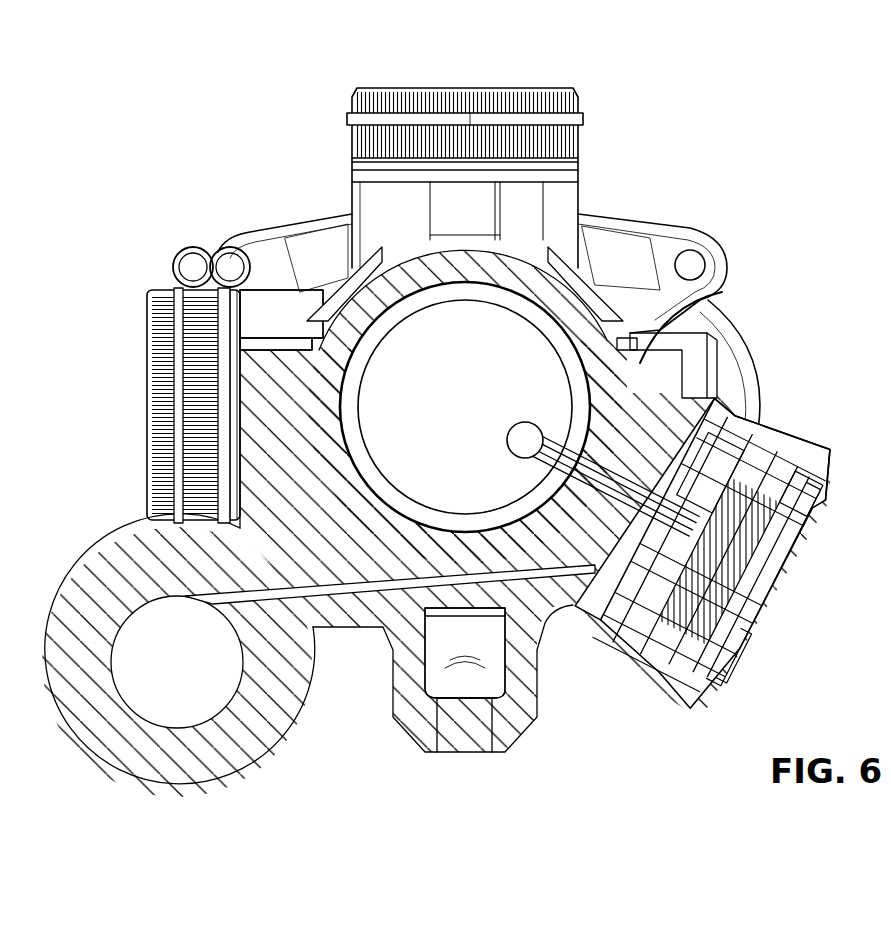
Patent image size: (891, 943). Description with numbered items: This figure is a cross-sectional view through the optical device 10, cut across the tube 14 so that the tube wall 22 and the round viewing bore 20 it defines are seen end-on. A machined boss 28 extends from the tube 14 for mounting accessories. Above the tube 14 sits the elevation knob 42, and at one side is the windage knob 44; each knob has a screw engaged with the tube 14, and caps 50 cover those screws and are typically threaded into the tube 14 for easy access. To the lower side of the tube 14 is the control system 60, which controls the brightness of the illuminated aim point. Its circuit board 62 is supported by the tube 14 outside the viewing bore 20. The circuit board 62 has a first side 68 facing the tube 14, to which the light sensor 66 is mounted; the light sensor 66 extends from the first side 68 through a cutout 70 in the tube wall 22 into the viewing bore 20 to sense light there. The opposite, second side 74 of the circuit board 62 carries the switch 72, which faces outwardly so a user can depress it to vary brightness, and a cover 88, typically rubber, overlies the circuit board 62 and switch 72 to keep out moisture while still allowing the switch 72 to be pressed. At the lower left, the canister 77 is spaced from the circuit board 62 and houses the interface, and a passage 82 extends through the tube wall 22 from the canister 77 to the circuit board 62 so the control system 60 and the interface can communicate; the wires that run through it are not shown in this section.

The optical device 10 is at (745, 215).
The tube 14 is at (628, 218).
The viewing bore 20 is at (403, 343).
The tube wall 22 is at (702, 296).
The machined boss 28 is at (720, 365).
The elevation knob 42 is at (487, 88).
The windage knob 44 is at (147, 428).
The cap 50 is at (440, 98).
The control system 60 is at (800, 563).
The circuit board 62 is at (700, 450).
The light sensor 66 is at (520, 437).
The first side 68 is at (688, 475).
The cutout 70 is at (570, 470).
The switch 72 is at (772, 588).
The second side 74 is at (735, 496).
The canister 77 is at (128, 787).
The passage 82 is at (337, 590).
The cover 88 is at (736, 643).